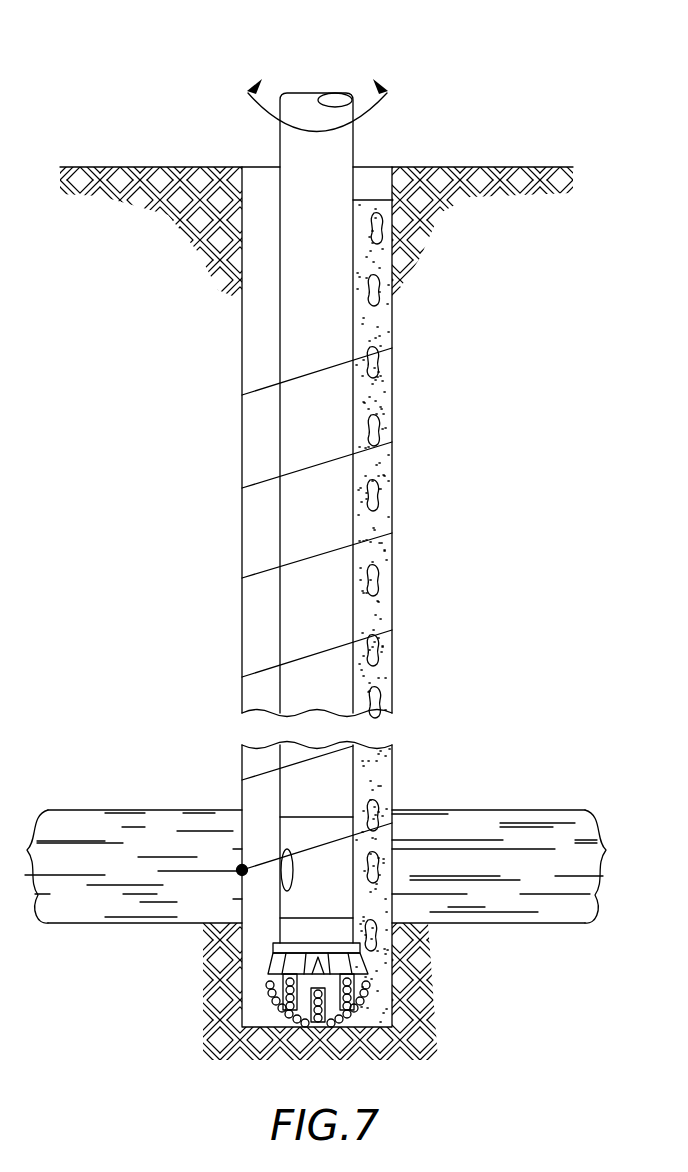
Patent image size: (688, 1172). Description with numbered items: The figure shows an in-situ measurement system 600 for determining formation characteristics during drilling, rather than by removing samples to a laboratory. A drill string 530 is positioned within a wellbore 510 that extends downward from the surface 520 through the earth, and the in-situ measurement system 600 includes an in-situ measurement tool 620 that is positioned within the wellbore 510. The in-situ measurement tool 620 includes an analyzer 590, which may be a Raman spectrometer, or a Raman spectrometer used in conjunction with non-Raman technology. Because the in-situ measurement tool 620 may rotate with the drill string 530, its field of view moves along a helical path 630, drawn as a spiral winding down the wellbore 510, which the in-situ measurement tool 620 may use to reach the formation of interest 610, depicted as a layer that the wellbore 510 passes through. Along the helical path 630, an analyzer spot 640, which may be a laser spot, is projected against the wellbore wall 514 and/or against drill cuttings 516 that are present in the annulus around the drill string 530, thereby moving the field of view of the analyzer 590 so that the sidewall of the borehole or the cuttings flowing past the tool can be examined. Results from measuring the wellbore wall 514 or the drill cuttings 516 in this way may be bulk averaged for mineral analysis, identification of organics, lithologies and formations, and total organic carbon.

The wellbore 510 is at (242, 557).
The wellbore wall 514 is at (242, 352).
The drill cuttings 516 is at (392, 290).
The surface 520 is at (108, 166).
The drill string 530 is at (275, 932).
The analyzer 590 is at (290, 893).
The in-situ measurement system 600 is at (514, 94).
The formation of interest 610 is at (545, 809).
The in-situ measurement tool 620 is at (360, 905).
The helical path 630 is at (262, 483).
The analyzer spot 640 is at (240, 868).